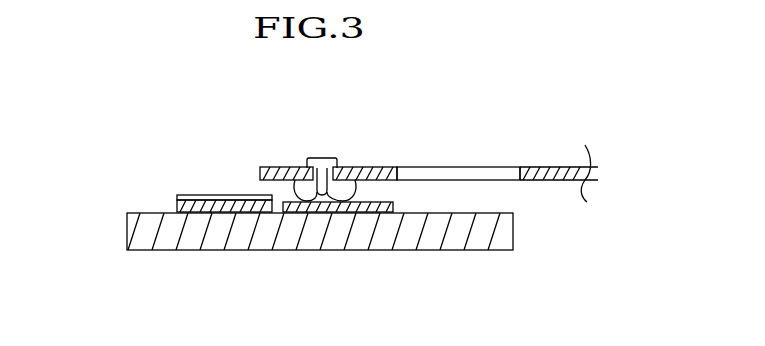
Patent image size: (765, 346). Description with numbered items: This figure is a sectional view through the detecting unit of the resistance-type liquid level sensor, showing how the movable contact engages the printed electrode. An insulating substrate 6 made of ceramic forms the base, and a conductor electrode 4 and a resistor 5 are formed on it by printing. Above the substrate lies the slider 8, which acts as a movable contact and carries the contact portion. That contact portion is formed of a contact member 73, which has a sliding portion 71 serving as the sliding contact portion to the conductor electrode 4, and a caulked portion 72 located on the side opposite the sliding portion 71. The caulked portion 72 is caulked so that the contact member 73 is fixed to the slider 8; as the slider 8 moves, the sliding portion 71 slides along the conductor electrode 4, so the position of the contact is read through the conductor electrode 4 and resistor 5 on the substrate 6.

The conductor electrode 4 is at (376, 166).
The resistor 5 is at (218, 195).
The insulating substrate 6 is at (152, 223).
The slider 8 is at (527, 167).
The sliding portion 71 is at (298, 168).
The caulked portion 72 is at (322, 164).
The contact member 73 is at (291, 199).